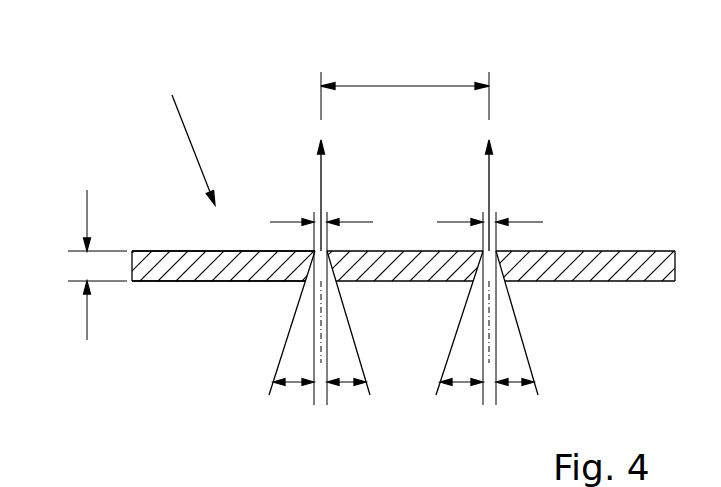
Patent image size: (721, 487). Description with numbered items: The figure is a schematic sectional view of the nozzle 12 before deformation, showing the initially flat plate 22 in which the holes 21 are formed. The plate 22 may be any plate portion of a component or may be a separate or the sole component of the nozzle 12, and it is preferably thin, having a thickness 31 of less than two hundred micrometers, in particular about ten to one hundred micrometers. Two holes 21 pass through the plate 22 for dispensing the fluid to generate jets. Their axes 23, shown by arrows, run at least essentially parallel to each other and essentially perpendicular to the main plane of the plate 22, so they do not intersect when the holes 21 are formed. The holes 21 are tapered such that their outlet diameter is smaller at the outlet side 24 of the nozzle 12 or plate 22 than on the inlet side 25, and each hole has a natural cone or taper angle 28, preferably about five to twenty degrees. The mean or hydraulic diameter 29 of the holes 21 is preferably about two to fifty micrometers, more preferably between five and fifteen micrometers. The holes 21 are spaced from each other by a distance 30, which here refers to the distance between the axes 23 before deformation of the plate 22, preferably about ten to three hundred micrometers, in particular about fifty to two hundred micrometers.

The nozzle 12 is at (185, 137).
The holes 21 is at (489, 251).
The plate 22 is at (628, 268).
The axes 23 is at (321, 180).
The outlet side 24 is at (170, 250).
The inlet side 25 is at (152, 282).
The taper angle 28 is at (293, 383).
The hydraulic diameter 29 is at (314, 213).
The distance 30 is at (400, 84).
The thickness 31 is at (85, 265).